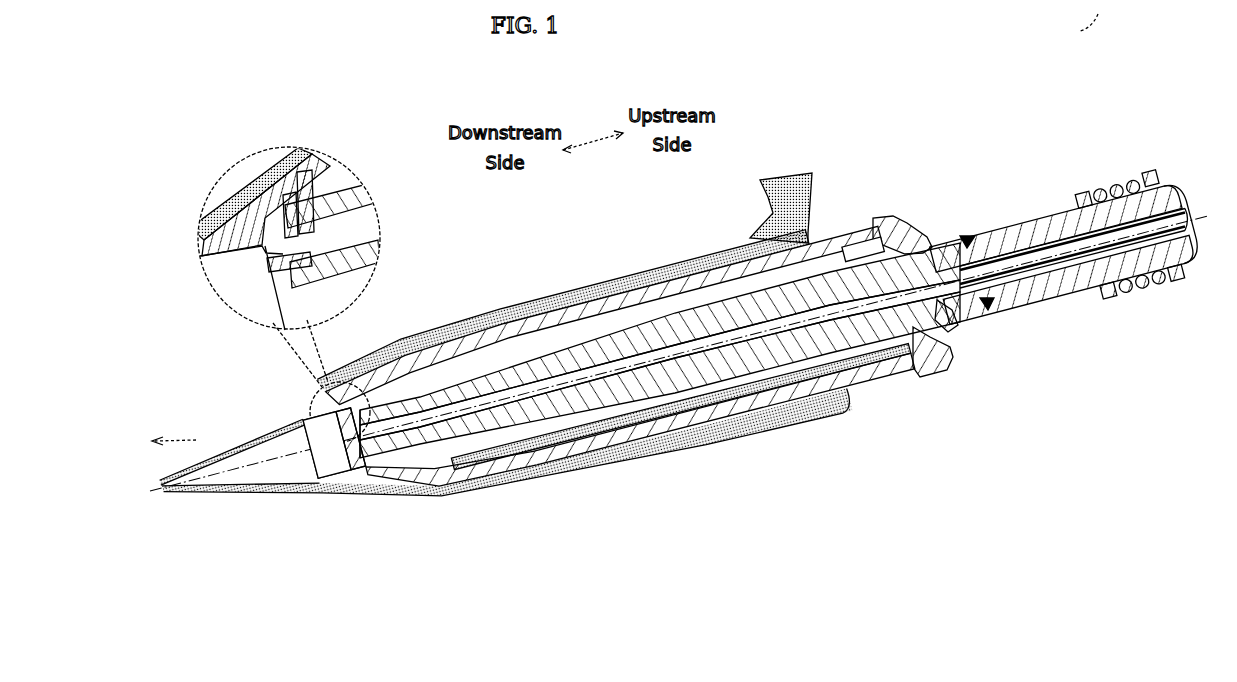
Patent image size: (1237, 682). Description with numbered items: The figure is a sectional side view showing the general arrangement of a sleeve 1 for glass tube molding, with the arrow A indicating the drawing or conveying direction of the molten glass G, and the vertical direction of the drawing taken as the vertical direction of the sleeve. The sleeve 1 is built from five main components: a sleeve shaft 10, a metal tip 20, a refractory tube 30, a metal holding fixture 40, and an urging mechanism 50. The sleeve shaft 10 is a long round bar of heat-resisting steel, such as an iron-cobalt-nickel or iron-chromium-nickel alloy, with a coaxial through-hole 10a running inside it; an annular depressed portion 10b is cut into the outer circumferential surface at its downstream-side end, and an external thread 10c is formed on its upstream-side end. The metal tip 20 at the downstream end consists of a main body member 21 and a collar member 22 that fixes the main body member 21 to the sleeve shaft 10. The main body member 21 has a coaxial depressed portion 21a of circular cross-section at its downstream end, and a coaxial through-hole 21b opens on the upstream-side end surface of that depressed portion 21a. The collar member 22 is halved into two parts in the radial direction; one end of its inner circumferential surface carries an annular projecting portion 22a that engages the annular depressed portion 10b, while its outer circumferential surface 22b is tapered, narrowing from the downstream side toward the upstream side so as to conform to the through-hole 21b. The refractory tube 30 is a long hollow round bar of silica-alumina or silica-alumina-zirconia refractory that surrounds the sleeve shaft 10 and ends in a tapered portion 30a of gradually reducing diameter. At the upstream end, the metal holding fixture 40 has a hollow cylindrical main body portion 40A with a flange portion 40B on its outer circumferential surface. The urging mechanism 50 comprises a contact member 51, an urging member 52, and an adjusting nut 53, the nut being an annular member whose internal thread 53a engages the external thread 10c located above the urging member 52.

The sleeve for glass tube molding 1 is at (1093, 15).
The sleeve shaft 10 is at (600, 330).
The through-hole 10a is at (627, 362).
The annular depressed portion 10b is at (320, 240).
The external thread 10c is at (1160, 278).
The metal tip 20 is at (232, 372).
The main body member 21 is at (302, 410).
The depressed portion 21a is at (207, 281).
The through-hole 21b is at (237, 202).
The collar member 22 is at (325, 399).
The annular projecting portion 22a is at (320, 277).
The outer circumferential surface 22b is at (305, 192).
The refractory tube 30 is at (500, 300).
The tapered portion 30a is at (407, 498).
The metal holding fixture 40 is at (886, 224).
The main body portion 40A is at (950, 328).
The flange portion 40B is at (925, 370).
The urging mechanism 50 is at (1033, 106).
The contact member 51 is at (1025, 207).
The urging member 52 is at (1100, 190).
The adjusting nut 53 is at (1150, 176).
The internal thread 53a is at (1165, 182).
The arrow A is at (179, 437).
The molten glass G is at (806, 176).